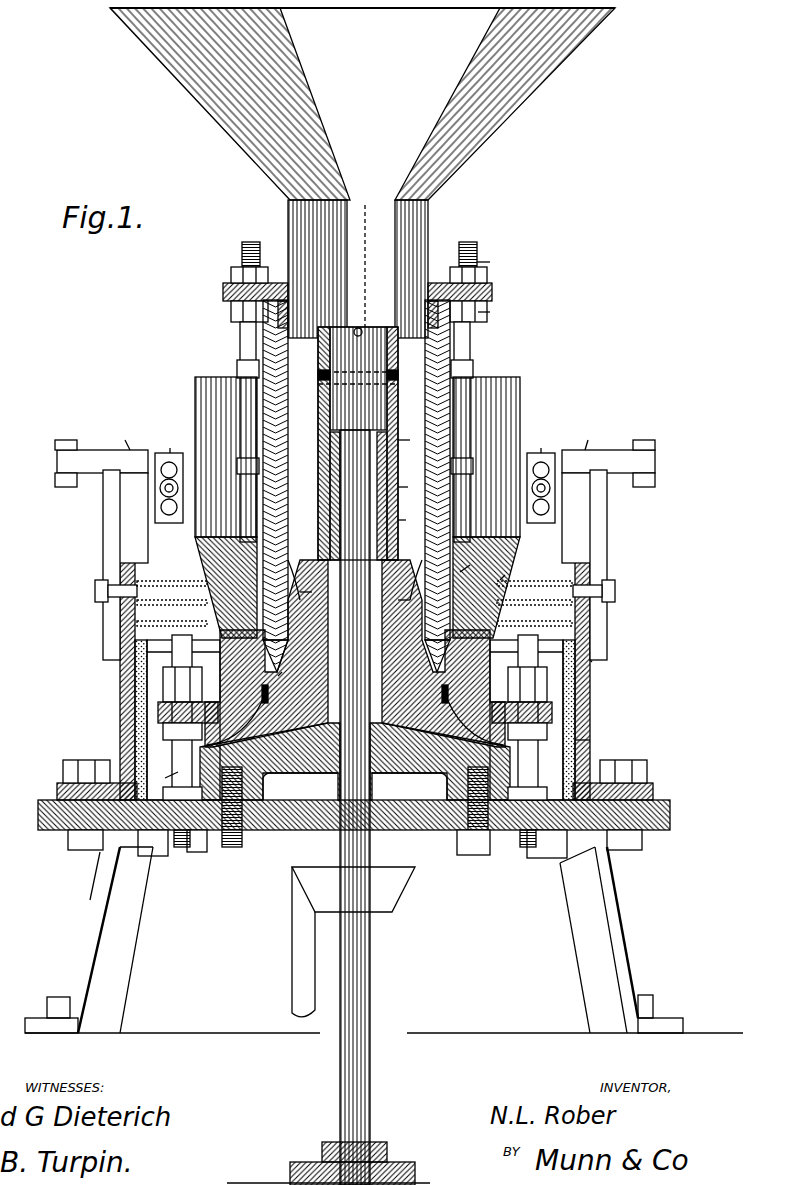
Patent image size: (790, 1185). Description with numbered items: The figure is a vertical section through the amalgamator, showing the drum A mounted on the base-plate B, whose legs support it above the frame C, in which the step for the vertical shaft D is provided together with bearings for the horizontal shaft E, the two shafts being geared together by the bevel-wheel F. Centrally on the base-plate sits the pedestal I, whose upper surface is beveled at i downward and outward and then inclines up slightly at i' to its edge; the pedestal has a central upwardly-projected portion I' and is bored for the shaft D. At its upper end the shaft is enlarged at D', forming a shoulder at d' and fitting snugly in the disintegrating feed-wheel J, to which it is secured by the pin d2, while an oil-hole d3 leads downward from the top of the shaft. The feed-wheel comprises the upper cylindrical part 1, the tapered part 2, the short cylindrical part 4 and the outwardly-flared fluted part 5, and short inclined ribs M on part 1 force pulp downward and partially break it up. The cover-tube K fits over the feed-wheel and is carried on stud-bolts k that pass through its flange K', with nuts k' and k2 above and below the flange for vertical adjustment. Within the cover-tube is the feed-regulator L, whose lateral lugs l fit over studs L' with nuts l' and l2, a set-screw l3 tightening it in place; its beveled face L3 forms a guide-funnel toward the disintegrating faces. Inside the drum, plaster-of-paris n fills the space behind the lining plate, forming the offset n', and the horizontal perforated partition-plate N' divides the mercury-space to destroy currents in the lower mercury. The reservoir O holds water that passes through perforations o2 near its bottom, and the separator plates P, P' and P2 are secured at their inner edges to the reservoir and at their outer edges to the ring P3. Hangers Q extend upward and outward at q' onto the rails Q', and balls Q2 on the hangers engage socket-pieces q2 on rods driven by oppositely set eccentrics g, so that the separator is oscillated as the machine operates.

The projecting ribs M is at (362, 239).
The lateral lugs l is at (356, 301).
The bolts or studs L' is at (371, 269).
The nut l' is at (491, 263).
The nut l2 is at (493, 311).
The set-screw l3 is at (470, 440).
The feed-regulator L is at (358, 432).
The reservoir O is at (195, 386).
The central tube d is at (347, 443).
The enlarged portion of shaft D' is at (358, 378).
The shoulder d' is at (373, 485).
The pin d2 is at (359, 385).
The oil-hole d3 is at (362, 320).
The disintegrating feed-wheel J is at (405, 441).
The upper cylindrical part 1 is at (406, 489).
The central upwardly-projected portion I' is at (404, 515).
The vertical shaft D is at (367, 807).
The cover-tube K is at (377, 587).
The eccentrics g is at (355, 713).
The short cylindrical part 4 is at (352, 668).
The tapered part 2 is at (355, 585).
The pedestal I is at (355, 761).
The outwardly-flared fluted part 5 is at (355, 786).
The upwardly-inclined edge portion i' is at (387, 797).
The base-plate B is at (288, 822).
The drum A is at (120, 666).
The shoulder or offset n' is at (355, 711).
The perforated partition-plate N' is at (623, 642).
The plaster-of-paris n is at (616, 739).
The stud-bolts k is at (399, 741).
The nut k' is at (358, 680).
The flange of cover K' is at (355, 705).
The nut k2 is at (163, 732).
The beveled upper surface i is at (165, 779).
The frame C is at (384, 896).
The rails or guides Q' is at (356, 501).
The hangers Q is at (343, 565).
The balls Q2 is at (160, 490).
The outward portions of hangers q' is at (368, 437).
The socket-pieces q2 is at (378, 440).
The ring P3 is at (140, 580).
The perforated annular plate P is at (354, 575).
The perforated annular plate P' is at (354, 596).
The perforated annular plate P2 is at (354, 617).
The perforations o2 is at (515, 572).
The beveled face L3 is at (470, 560).
The horizontal shaft E is at (353, 942).
The bevel-wheel F is at (328, 1163).